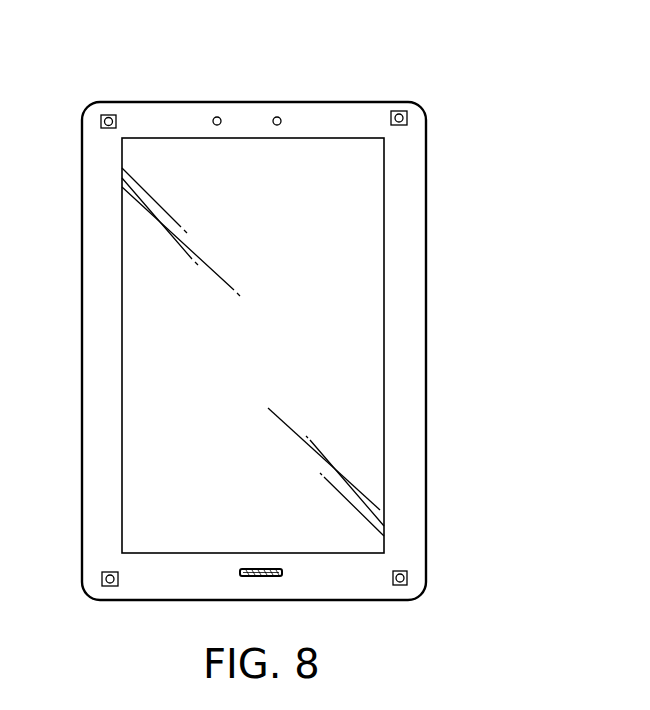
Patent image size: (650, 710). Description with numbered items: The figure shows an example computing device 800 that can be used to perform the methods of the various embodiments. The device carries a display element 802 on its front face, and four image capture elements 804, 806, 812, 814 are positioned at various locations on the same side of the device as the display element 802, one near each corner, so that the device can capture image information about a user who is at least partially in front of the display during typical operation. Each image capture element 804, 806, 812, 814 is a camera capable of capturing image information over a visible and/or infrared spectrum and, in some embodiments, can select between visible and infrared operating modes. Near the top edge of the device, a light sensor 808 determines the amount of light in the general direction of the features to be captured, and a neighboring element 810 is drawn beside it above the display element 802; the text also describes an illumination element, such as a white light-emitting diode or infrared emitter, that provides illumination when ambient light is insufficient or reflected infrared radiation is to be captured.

The computing device 800 is at (571, 153).
The display element 802 is at (122, 150).
The image capture element 804 is at (108, 115).
The image capture element 806 is at (401, 111).
The light sensor 808 is at (281, 117).
The camera / sensor 810 is at (214, 117).
The image capture element 812 is at (110, 586).
The image capture element 814 is at (400, 585).